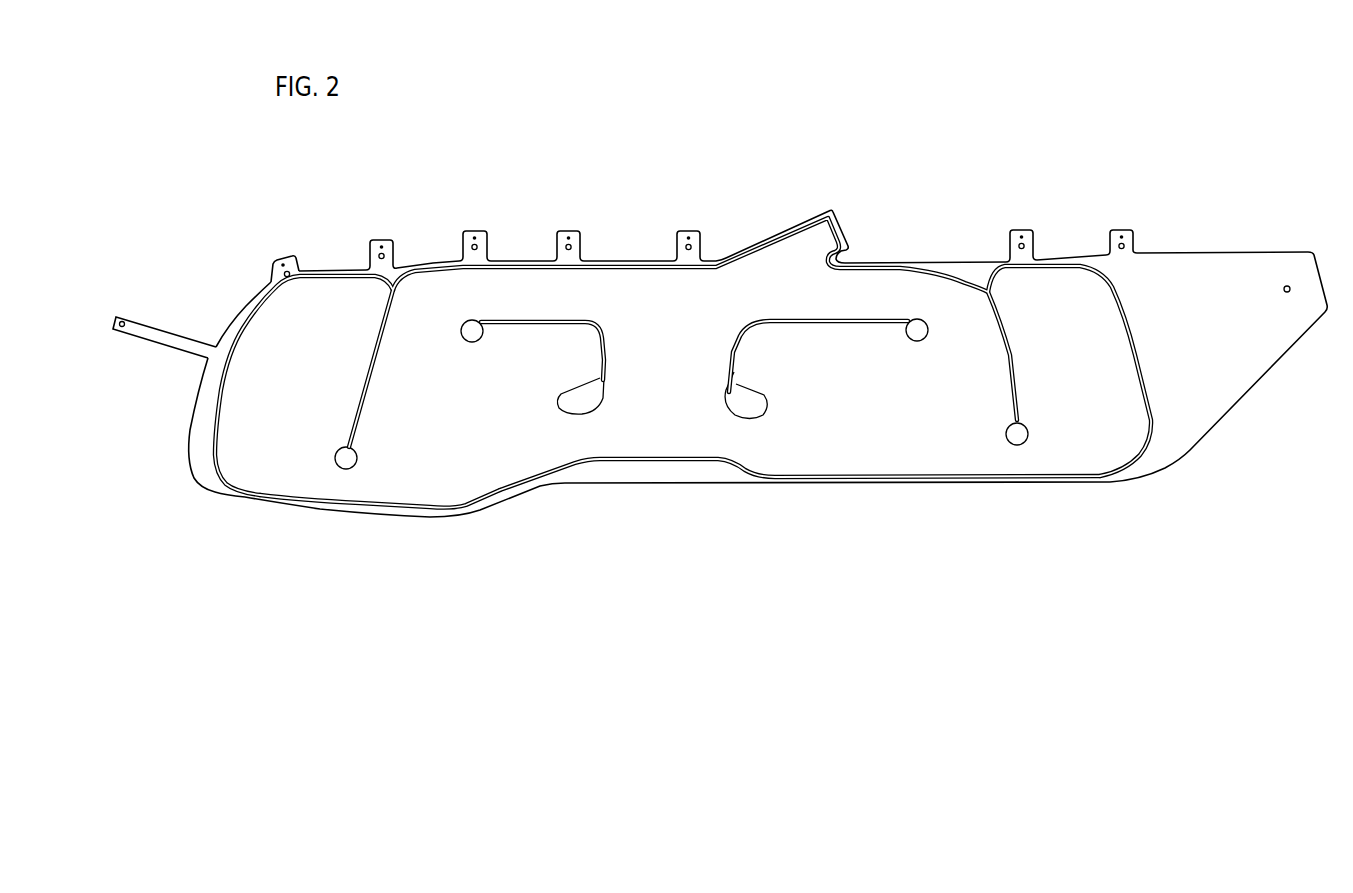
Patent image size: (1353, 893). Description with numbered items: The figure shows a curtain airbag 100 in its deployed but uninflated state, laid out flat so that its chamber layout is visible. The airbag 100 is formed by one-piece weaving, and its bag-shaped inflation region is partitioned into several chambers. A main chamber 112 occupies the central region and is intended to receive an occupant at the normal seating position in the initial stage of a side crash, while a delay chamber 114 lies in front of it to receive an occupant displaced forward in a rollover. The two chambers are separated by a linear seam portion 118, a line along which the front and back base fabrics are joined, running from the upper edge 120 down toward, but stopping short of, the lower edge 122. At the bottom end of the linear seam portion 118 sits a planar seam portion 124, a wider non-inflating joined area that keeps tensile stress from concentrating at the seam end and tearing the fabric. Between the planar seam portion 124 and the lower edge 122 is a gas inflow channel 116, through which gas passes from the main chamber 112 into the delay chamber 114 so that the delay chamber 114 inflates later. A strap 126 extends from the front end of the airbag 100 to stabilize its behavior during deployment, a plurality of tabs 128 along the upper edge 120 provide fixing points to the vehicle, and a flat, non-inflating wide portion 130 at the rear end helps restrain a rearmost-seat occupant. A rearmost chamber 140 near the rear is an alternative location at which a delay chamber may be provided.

The airbag 100 is at (893, 234).
The main chamber 112 is at (509, 467).
The delay chamber 114 is at (232, 455).
The gas inflow channel 116 is at (366, 494).
The linear seam portion 118 is at (370, 349).
The upper edge 120 is at (404, 276).
The lower edge 122 is at (302, 508).
The planar seam portion 124 is at (360, 452).
The strap 126 is at (146, 328).
The tab 128 is at (282, 262).
The wide portion 130 is at (1188, 262).
The rearmost chamber 140 is at (1058, 297).